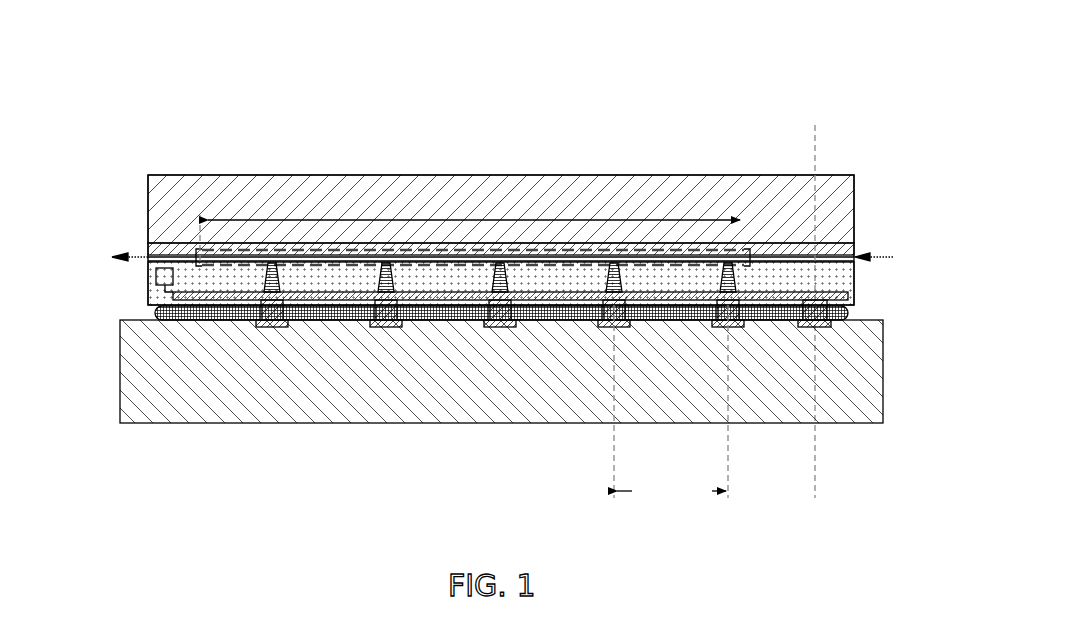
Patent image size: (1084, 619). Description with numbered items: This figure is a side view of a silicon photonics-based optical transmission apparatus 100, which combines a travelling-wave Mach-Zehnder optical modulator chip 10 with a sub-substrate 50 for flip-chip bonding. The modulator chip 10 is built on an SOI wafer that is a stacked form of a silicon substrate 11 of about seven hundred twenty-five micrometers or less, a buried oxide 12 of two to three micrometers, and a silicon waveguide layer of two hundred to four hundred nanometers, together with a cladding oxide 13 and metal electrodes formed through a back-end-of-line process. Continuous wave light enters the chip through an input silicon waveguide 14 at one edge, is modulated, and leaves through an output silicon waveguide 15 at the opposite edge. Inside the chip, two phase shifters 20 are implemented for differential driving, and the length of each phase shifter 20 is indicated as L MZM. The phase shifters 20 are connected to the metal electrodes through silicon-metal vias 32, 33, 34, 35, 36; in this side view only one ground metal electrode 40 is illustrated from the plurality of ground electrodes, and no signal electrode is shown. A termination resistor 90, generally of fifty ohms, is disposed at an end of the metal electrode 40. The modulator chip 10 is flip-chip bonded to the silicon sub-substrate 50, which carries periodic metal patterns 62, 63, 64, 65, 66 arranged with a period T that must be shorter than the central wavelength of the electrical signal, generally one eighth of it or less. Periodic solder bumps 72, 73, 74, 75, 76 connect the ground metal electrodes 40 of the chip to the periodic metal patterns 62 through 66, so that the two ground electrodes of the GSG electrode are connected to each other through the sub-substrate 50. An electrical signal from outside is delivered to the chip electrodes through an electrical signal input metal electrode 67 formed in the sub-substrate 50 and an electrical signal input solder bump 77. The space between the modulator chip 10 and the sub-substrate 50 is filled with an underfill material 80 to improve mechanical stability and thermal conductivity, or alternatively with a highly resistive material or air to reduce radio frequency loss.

The silicon photonics-based optical transmission apparatus 100 is at (866, 48).
The travelling-wave Mach-Zehnder optical modulator chip 10 is at (527, 224).
The silicon substrate 11 is at (843, 195).
The input silicon waveguide 14 is at (822, 256).
The buried oxide 12 is at (843, 248).
The cladding oxide 13 is at (848, 277).
The output silicon waveguide 15 is at (157, 256).
The phase shifter 20 is at (195, 250).
The silicon-metal via 32 is at (276, 263).
The silicon-metal via 33 is at (390, 263).
The silicon-metal via 34 is at (504, 263).
The silicon-metal via 35 is at (618, 263).
The silicon-metal via 36 is at (732, 263).
The ground metal electrode 40 is at (845, 299).
The sub-substrate 50 is at (883, 372).
The periodic metal pattern 62 is at (280, 322).
The periodic metal pattern 63 is at (394, 322).
The periodic metal pattern 64 is at (508, 322).
The periodic metal pattern 65 is at (622, 322).
The periodic metal pattern 66 is at (736, 322).
The electrical signal input metal electrode 67 is at (843, 322).
The periodic solder bump 72 is at (266, 322).
The periodic solder bump 73 is at (380, 322).
The periodic solder bump 74 is at (494, 322).
The periodic solder bump 75 is at (608, 322).
The periodic solder bump 76 is at (722, 322).
The electrical signal input solder bump 77 is at (808, 322).
The underfill material 80 is at (170, 315).
The termination resistor 90 is at (156, 278).